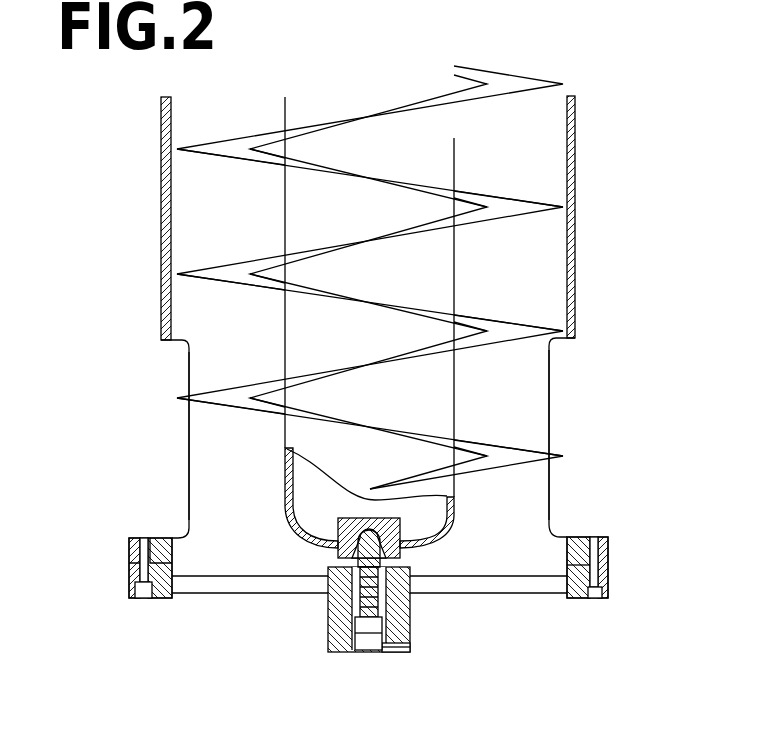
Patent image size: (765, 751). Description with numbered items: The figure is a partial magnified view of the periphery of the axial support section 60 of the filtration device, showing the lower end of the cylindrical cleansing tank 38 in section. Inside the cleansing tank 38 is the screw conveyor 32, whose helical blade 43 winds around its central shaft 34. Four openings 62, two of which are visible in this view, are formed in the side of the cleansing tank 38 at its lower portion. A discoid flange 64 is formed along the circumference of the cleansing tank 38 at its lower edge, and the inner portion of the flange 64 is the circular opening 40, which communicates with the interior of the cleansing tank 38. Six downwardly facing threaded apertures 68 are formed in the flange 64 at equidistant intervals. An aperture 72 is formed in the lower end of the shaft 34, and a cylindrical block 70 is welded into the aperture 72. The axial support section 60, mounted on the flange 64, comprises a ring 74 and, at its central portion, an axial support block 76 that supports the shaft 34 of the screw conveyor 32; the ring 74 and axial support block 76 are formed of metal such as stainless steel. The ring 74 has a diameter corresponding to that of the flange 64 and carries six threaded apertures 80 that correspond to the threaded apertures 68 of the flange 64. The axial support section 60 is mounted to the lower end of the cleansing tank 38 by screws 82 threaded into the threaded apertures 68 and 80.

The screw conveyor 32 is at (383, 197).
The shaft 34 is at (455, 422).
The cleansing tank 38 is at (582, 214).
The circular opening 40 is at (546, 578).
The blade 43 is at (513, 212).
The axial support section 60 is at (406, 594).
The openings 62 is at (562, 344).
The flange 64 is at (583, 540).
The threaded apertures 68 is at (607, 543).
The cylindrical block 70 is at (401, 545).
The aperture 72 is at (358, 540).
The ring 74 is at (580, 596).
The axial support block 76 is at (343, 638).
The threaded apertures 80 is at (607, 572).
The screws 82 is at (143, 597).